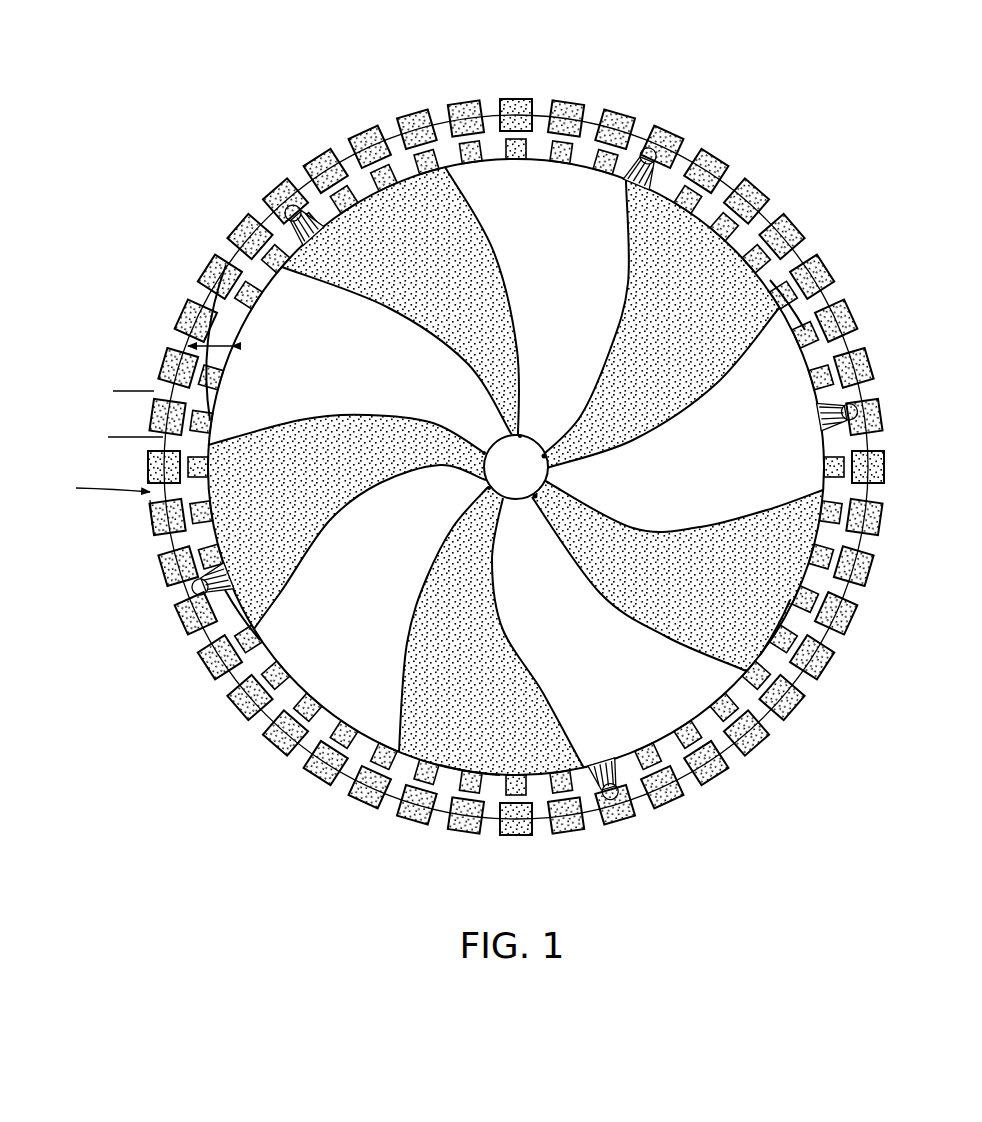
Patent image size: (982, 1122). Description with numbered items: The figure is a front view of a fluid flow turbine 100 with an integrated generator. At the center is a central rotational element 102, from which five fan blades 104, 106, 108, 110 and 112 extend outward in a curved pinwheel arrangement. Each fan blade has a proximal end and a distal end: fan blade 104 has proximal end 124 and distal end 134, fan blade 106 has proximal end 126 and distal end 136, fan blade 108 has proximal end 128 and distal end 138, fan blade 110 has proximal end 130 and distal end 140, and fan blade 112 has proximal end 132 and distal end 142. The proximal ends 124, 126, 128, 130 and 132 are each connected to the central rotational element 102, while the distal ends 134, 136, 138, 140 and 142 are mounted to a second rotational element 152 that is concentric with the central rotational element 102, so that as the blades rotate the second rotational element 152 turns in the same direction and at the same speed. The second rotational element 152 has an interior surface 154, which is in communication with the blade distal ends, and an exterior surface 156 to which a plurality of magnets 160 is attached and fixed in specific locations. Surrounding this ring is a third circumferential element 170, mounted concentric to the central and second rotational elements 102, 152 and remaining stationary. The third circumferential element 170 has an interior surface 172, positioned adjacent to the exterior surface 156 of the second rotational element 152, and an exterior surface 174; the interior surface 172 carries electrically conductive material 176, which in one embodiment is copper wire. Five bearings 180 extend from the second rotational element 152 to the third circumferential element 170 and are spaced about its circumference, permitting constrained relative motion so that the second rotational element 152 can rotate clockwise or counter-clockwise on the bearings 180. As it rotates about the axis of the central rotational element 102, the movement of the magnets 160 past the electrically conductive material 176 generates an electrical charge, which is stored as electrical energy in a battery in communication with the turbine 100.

The fluid flow turbine 100 is at (252, 76).
The central rotational element 102 is at (516, 467).
The fan blade 104 is at (480, 256).
The fan blade 106 is at (700, 378).
The fan blade 108 is at (685, 538).
The fan blade 110 is at (515, 675).
The fan blade 112 is at (346, 430).
The proximal end 124 is at (528, 412).
The proximal end 126 is at (545, 455).
The proximal end 128 is at (538, 500).
The proximal end 130 is at (480, 494).
The proximal end 132 is at (465, 440).
The distal end 134 is at (352, 204).
The distal end 136 is at (796, 236).
The distal end 138 is at (812, 648).
The distal end 140 is at (427, 825).
The distal end 142 is at (232, 640).
The second rotational element 152 is at (252, 305).
The interior surface 154 is at (242, 346).
The exterior surface 156 is at (206, 346).
The magnets 160 is at (466, 128).
The third circumferential element 170 is at (151, 448).
The interior surface 172 is at (162, 505).
The exterior surface 174 is at (91, 479).
The electrically conductive material 176 is at (617, 822).
The bearings 180 is at (280, 205).